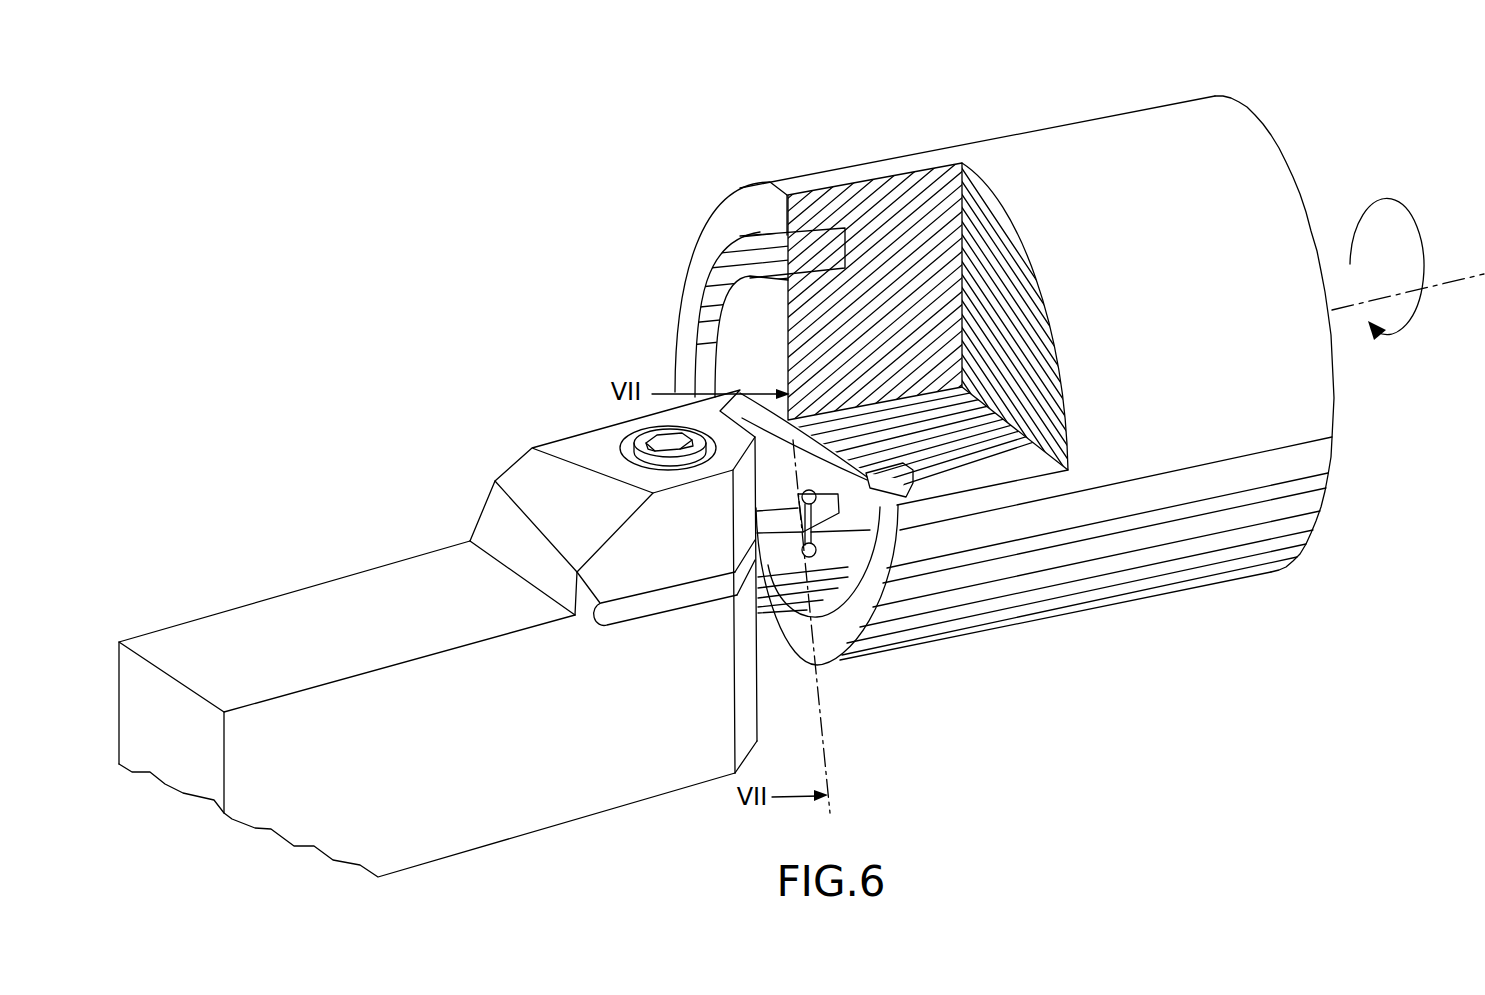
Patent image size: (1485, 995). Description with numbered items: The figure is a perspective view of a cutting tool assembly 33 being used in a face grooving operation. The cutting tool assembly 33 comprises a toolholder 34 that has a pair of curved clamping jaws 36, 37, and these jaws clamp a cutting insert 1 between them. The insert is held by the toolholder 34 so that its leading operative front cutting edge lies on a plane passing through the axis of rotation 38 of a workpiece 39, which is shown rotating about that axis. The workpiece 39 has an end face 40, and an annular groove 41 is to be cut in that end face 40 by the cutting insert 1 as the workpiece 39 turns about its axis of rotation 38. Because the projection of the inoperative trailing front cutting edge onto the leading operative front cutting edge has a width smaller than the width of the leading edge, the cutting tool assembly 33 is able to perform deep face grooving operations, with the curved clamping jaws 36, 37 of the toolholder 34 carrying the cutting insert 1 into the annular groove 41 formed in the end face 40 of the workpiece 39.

The cutting insert 1 is at (857, 508).
The cutting tool assembly 33 is at (276, 324).
The toolholder 34 is at (428, 573).
The curved clamping jaw 36 is at (765, 446).
The curved clamping jaw 37 is at (794, 632).
The axis of rotation 38 is at (1408, 269).
The workpiece 39 is at (1092, 138).
The end face 40 is at (697, 270).
The annular groove 41 is at (810, 250).